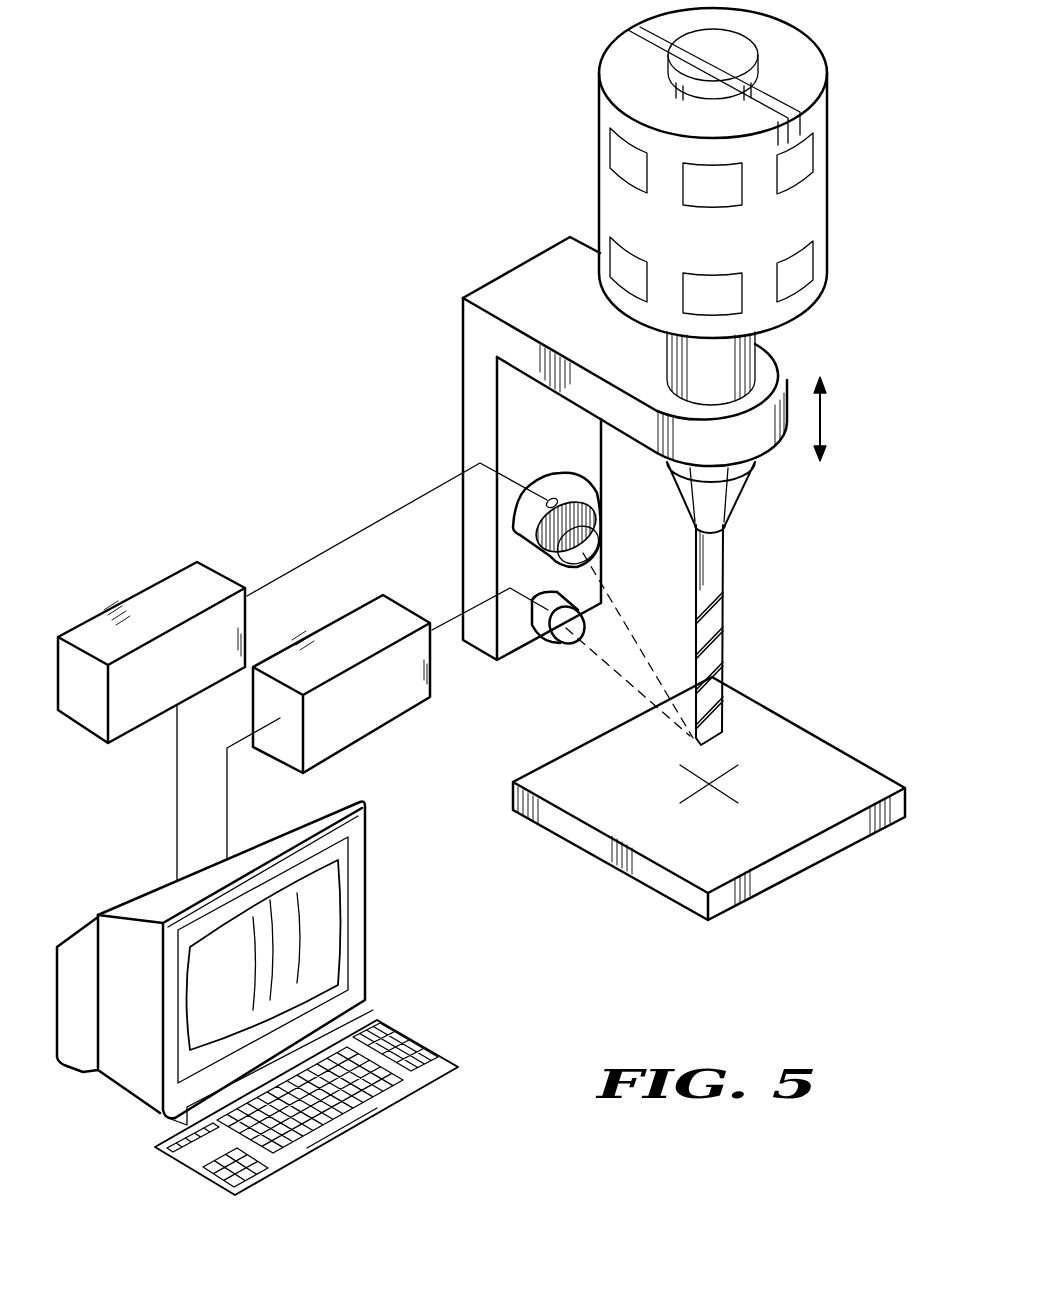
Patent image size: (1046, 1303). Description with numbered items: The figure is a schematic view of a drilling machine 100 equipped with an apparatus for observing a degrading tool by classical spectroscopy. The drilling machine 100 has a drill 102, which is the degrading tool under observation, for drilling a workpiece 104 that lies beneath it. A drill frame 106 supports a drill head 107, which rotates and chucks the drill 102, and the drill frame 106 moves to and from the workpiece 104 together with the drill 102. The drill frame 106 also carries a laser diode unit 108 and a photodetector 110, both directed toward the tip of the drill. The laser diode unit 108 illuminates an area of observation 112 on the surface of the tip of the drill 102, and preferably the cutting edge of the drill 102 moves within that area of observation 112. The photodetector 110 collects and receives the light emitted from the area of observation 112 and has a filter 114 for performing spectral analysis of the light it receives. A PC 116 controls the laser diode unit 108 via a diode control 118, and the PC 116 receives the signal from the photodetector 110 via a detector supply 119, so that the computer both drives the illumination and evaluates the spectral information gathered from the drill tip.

The drilling machine 100 is at (561, 199).
The drill 102 is at (724, 553).
The workpiece 104 is at (806, 866).
The drill frame 106 is at (463, 406).
The drill head 107 is at (748, 488).
The laser diode unit 108 is at (549, 645).
The photodetector 110 is at (597, 492).
The area of observation 112 is at (691, 735).
The filter 114 is at (585, 522).
The PC 116 is at (368, 905).
The diode control 118 is at (368, 738).
The detector supply 119 is at (157, 581).